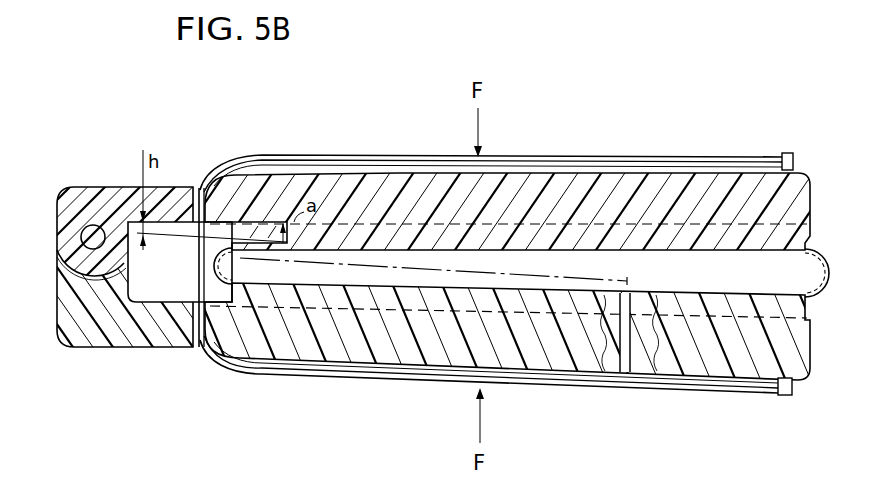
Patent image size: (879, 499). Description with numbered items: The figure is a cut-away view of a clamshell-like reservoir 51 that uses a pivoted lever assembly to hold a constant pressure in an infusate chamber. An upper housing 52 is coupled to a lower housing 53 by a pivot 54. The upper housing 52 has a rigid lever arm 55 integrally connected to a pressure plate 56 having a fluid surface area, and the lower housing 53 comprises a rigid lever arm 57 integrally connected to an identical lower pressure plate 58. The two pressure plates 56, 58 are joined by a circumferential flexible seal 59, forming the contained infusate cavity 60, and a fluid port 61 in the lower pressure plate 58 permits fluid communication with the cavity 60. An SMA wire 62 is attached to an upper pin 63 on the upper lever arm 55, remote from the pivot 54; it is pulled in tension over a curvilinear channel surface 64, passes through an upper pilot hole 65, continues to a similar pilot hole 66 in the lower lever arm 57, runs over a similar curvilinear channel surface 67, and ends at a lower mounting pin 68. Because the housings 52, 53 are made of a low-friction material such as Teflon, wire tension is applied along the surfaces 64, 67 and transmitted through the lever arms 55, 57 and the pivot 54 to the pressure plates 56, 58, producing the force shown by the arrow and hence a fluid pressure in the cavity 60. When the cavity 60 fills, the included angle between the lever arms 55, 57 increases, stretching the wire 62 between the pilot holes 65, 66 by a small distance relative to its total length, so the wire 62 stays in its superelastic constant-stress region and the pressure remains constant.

The clamshell-like reservoir 51 is at (278, 118).
The upper housing 52 is at (423, 143).
The lower housing 53 is at (395, 393).
The pivot 54 is at (86, 230).
The rigid lever arm 55 is at (127, 186).
The pressure plate 56 is at (655, 228).
The rigid lever arm 57 is at (125, 327).
The lower pressure plate 58 is at (719, 312).
The circumferential flexible seal 59 is at (825, 263).
The infusate cavity 60 is at (790, 273).
The fluid port 61 is at (627, 368).
The SMA wire 62 is at (199, 262).
The upper pin 63 is at (790, 153).
The curvilinear channel surface 64 is at (356, 170).
The upper pilot hole 65 is at (200, 190).
The pilot hole 66 is at (200, 345).
The curvilinear channel surface 67 is at (309, 364).
The lower mounting pin 68 is at (790, 396).